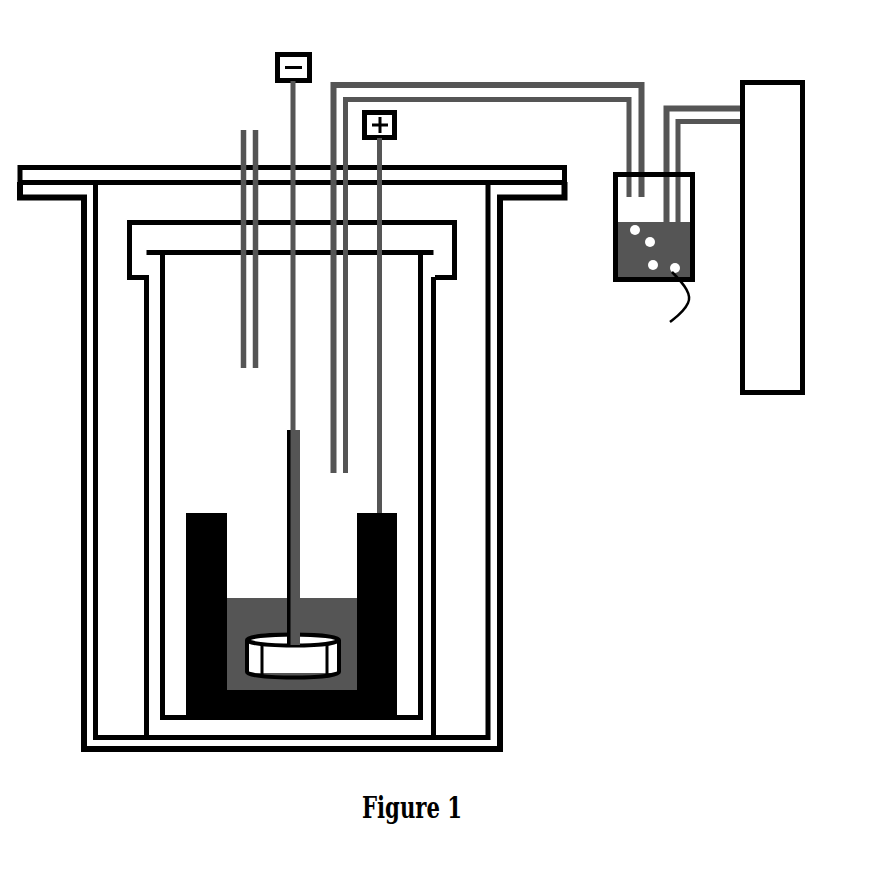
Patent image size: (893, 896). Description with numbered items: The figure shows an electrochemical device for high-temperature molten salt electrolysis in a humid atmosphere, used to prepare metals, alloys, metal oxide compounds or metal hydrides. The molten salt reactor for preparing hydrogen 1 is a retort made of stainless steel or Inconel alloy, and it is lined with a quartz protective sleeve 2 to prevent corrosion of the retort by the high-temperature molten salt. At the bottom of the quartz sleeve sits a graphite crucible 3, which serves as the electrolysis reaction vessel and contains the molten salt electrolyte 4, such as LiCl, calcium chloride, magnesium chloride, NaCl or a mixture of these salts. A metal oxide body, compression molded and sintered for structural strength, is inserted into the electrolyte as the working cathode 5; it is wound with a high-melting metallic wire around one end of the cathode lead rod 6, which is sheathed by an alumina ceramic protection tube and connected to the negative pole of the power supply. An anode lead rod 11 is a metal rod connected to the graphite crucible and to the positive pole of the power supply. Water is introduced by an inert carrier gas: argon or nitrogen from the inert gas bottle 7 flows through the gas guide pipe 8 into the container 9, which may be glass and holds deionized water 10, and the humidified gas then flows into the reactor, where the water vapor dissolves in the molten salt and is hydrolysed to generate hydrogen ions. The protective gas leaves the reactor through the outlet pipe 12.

The molten salt reactor for preparing hydrogen 1 is at (495, 550).
The quartz protective sleeve 2 is at (440, 235).
The graphite crucible 3 is at (220, 512).
The molten salt electrolyte 4 is at (255, 615).
The working cathode 5 is at (303, 660).
The cathode lead rod 6 is at (293, 405).
The inert gas bottle 7 is at (772, 332).
The gas guide pipe 8 is at (518, 87).
The container 9 is at (617, 218).
The water 10 is at (632, 258).
The anode lead rod 11 is at (378, 367).
The steam generating device 12 is at (240, 146).